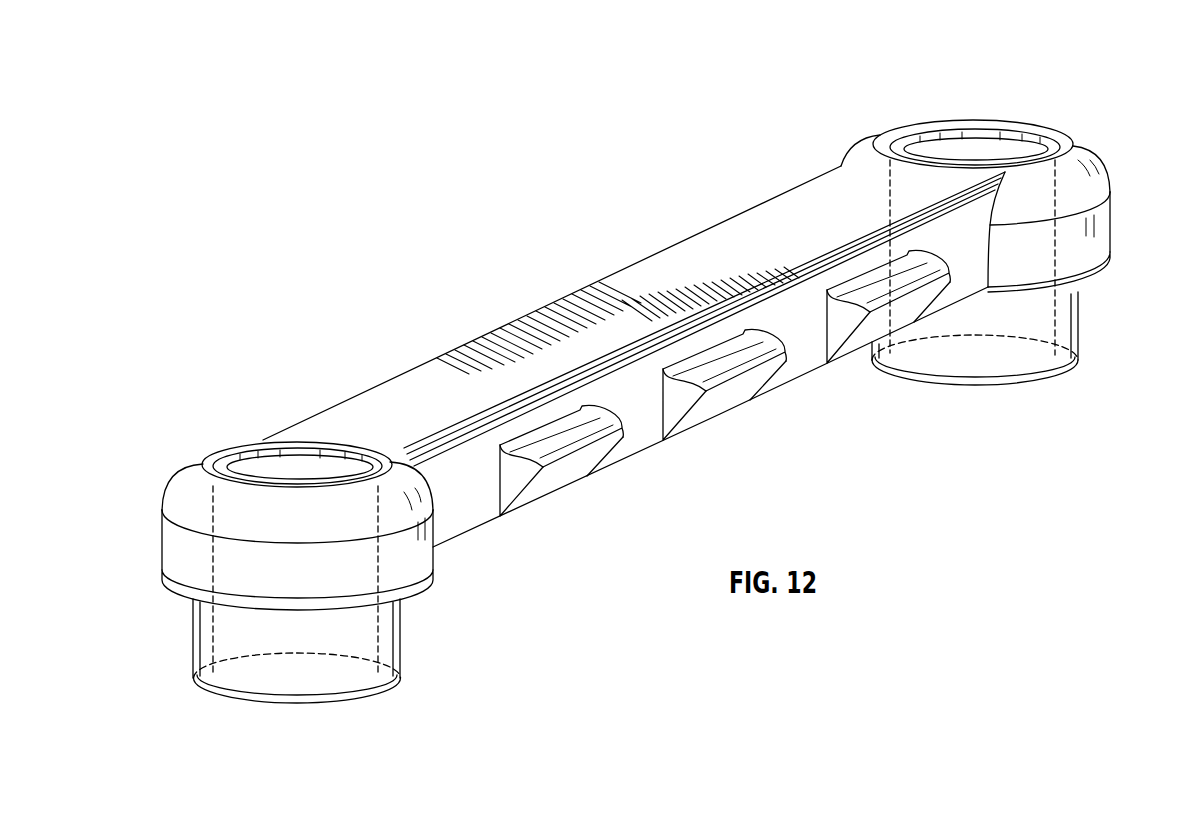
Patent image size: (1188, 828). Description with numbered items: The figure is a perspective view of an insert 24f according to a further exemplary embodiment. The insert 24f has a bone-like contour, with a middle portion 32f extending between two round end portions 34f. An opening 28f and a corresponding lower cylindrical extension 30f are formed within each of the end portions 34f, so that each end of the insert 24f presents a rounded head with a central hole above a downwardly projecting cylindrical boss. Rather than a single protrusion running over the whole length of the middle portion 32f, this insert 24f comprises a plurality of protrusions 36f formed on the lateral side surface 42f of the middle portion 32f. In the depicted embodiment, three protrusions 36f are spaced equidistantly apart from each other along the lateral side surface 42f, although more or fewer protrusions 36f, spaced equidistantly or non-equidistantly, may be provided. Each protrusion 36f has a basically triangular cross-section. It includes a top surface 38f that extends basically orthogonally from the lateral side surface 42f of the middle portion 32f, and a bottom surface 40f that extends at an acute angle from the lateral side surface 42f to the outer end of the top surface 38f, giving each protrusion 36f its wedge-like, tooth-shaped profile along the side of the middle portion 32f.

The insert 24f is at (541, 161).
The opening 28f is at (315, 472).
The lower cylindrical extension 30f is at (421, 636).
The middle portion 32f is at (683, 215).
The round end portion 34f is at (204, 420).
The protrusion 36f is at (561, 530).
The top surface 38f is at (556, 440).
The bottom surface 40f is at (577, 467).
The lateral side surface 42f is at (630, 380).